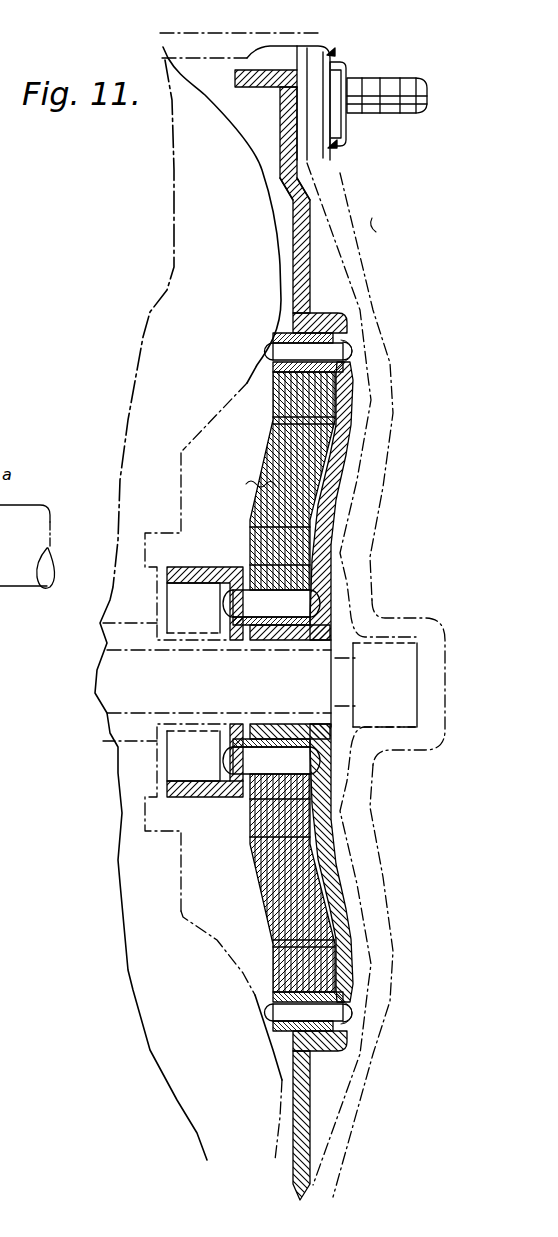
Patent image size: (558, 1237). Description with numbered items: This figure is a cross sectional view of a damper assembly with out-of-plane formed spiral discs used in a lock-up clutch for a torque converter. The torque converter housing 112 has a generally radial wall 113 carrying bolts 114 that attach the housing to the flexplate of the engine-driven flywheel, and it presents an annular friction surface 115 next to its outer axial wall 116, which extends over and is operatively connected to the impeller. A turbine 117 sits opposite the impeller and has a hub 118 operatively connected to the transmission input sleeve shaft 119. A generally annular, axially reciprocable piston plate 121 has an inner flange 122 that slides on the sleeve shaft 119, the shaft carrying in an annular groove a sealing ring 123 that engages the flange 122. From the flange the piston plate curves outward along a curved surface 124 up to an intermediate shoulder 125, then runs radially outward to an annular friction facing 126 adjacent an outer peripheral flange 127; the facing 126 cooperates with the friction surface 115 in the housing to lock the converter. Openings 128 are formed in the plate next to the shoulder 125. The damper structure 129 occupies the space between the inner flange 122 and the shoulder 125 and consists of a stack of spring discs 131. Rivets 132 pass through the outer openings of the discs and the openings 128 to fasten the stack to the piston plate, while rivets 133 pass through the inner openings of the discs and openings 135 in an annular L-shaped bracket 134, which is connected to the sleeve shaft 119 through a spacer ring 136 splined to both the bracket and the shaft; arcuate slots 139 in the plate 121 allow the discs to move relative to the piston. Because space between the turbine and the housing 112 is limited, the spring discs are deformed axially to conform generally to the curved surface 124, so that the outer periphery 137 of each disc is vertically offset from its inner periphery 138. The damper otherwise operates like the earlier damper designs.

The torque converter housing 112 is at (383, 325).
The radial wall 113 is at (383, 214).
The bolts 114 is at (397, 94).
The annular friction surface 115 is at (247, 150).
The outer axial wall 116 is at (162, 45).
The turbine 117 is at (330, 180).
The hub 118 is at (130, 604).
The transmission input sleeve shaft 119 is at (105, 733).
The piston plate 121 is at (296, 271).
The inner flange 122 is at (306, 727).
The sealing ring 123 is at (273, 658).
The curved surface 124 is at (343, 466).
The intermediate shoulder 125 is at (334, 301).
The annular friction facing 126 is at (344, 122).
The outer peripheral flange 127 is at (322, 37).
The openings 128 is at (352, 356).
The damper structure 129 is at (262, 455).
The spring discs 131 is at (241, 486).
The rivets 132 is at (266, 350).
The rivets 133 is at (312, 604).
The annular L-shaped bracket 134 is at (198, 567).
The openings 135 is at (234, 800).
The spacer ring 136 is at (127, 791).
The outer periphery 137 is at (298, 328).
The inner periphery 138 is at (290, 641).
The arcuate slots 139 is at (385, 742).